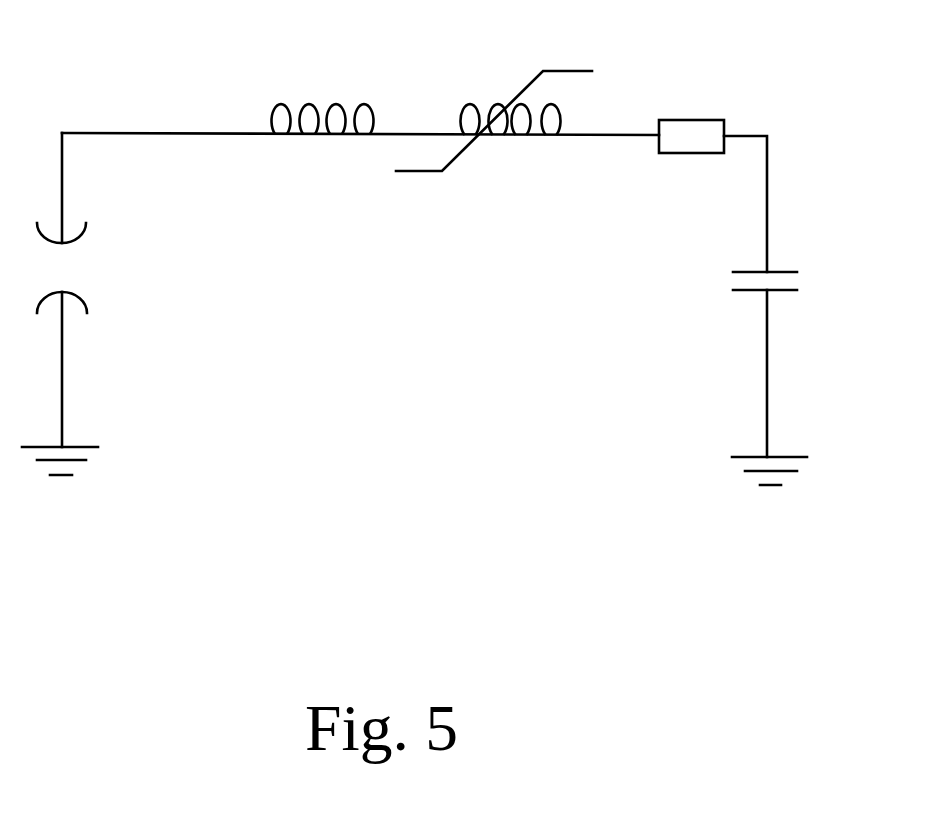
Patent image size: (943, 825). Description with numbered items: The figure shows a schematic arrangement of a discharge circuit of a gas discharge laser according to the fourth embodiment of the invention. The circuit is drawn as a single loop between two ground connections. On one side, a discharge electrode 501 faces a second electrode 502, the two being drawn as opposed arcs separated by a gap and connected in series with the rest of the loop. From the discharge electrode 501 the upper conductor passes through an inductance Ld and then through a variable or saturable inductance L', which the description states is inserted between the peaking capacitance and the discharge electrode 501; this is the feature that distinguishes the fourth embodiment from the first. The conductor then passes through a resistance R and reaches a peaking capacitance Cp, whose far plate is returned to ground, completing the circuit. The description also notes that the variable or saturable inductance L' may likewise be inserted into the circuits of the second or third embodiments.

The discharge electrode 501 is at (95, 191).
The second connector portion 502 is at (95, 368).
The inductor Ld is at (323, 91).
The variable or saturable inductance L' is at (494, 92).
The resistor R is at (691, 115).
The capacitor Cp is at (788, 292).